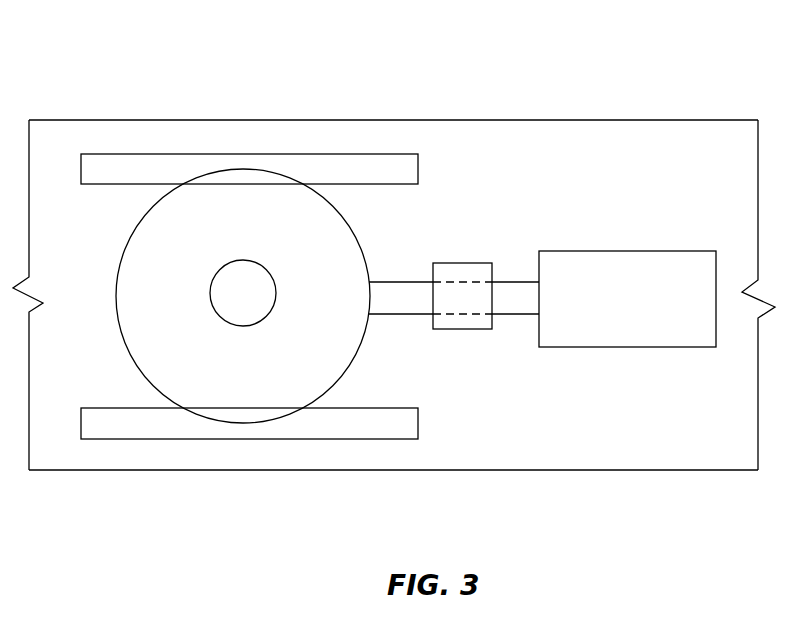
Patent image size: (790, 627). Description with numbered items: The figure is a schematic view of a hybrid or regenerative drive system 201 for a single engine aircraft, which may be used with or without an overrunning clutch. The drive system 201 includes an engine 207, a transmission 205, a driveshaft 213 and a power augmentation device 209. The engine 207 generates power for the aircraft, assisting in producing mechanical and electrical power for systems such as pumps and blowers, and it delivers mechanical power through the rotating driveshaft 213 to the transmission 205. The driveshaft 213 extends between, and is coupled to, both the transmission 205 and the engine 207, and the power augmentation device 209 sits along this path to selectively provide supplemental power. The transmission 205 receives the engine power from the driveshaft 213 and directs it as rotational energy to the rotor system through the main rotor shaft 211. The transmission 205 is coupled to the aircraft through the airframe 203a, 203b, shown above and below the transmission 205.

The hybrid drive system 201 is at (143, 90).
The airframe 203a is at (238, 440).
The airframe 203b is at (215, 154).
The transmission 205 is at (126, 246).
The engine 207 is at (637, 347).
The power augmentation device 209 is at (452, 330).
The main rotor shaft 211 is at (211, 305).
The driveshaft 213 is at (510, 315).